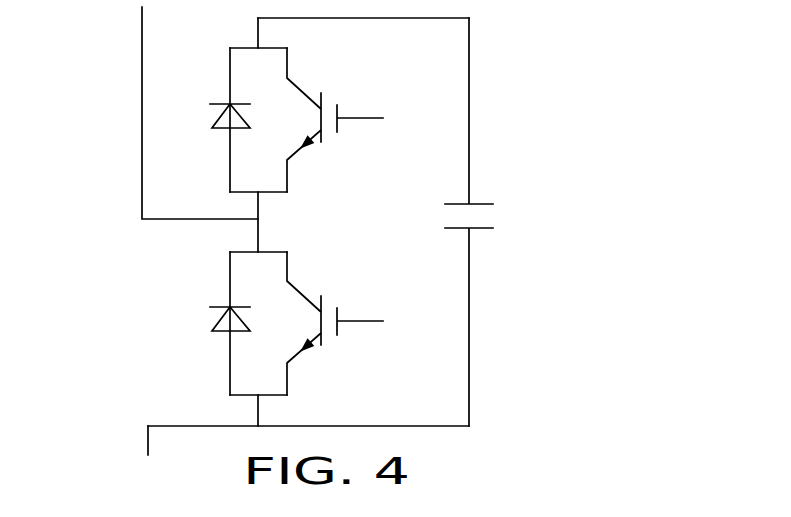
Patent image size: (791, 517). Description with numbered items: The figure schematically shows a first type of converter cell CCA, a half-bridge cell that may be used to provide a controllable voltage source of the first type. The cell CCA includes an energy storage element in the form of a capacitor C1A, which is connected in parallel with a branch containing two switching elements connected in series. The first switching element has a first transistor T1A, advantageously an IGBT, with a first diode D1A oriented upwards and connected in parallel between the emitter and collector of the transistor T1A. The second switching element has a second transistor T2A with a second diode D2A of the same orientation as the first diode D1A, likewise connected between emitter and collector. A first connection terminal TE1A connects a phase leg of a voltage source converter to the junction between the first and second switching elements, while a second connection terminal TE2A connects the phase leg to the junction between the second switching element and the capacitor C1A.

The first connection terminal TE1A is at (144, 113).
The second connection terminal TE2A is at (102, 450).
The first diode D1A is at (199, 120).
The first transistor T1A is at (323, 120).
The second diode D2A is at (199, 323).
The second transistor T2A is at (323, 323).
The capacitor C1A is at (435, 222).
The converter cell CCA is at (525, 110).